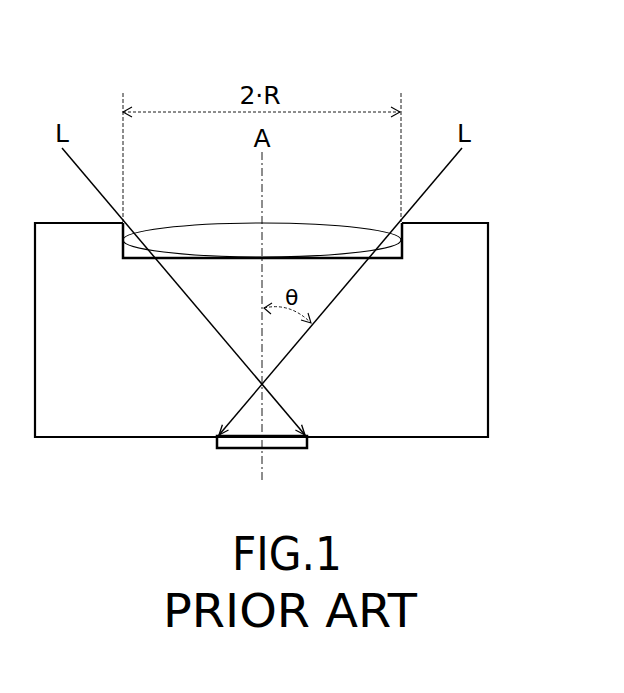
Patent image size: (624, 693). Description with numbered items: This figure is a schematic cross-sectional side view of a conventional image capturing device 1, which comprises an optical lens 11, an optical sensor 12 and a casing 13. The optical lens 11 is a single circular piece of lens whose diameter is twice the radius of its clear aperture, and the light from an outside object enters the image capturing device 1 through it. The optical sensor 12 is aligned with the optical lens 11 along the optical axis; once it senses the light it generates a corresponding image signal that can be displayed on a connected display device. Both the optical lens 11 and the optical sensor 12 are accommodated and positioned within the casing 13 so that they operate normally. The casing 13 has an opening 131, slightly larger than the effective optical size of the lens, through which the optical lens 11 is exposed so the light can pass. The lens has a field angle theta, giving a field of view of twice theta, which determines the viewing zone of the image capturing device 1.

The image capturing device 1 is at (447, 54).
The optical lens 11 is at (303, 237).
The optical sensor 12 is at (243, 441).
The casing 13 is at (475, 338).
The opening 131 is at (122, 252).